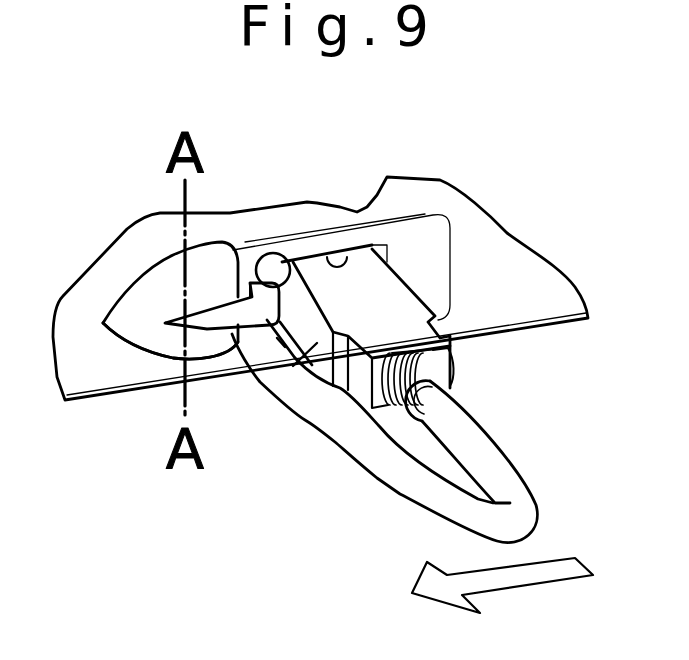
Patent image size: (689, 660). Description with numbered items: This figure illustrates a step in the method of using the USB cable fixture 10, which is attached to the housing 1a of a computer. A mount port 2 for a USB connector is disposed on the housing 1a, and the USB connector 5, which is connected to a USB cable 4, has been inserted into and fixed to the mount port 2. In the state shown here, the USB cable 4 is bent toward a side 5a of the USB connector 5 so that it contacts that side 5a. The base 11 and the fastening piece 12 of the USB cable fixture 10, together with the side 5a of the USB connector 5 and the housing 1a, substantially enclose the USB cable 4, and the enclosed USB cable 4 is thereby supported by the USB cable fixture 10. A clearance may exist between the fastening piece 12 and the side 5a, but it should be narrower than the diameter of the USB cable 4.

The housing 1a is at (112, 260).
The mount port 2 is at (350, 257).
The USB cable 4 is at (480, 447).
The USB connector 5 is at (392, 292).
The side of USB connector 5a is at (298, 363).
The USB cable fixture 10 is at (161, 254).
The base 11 is at (150, 347).
The fastening piece 12 is at (224, 329).